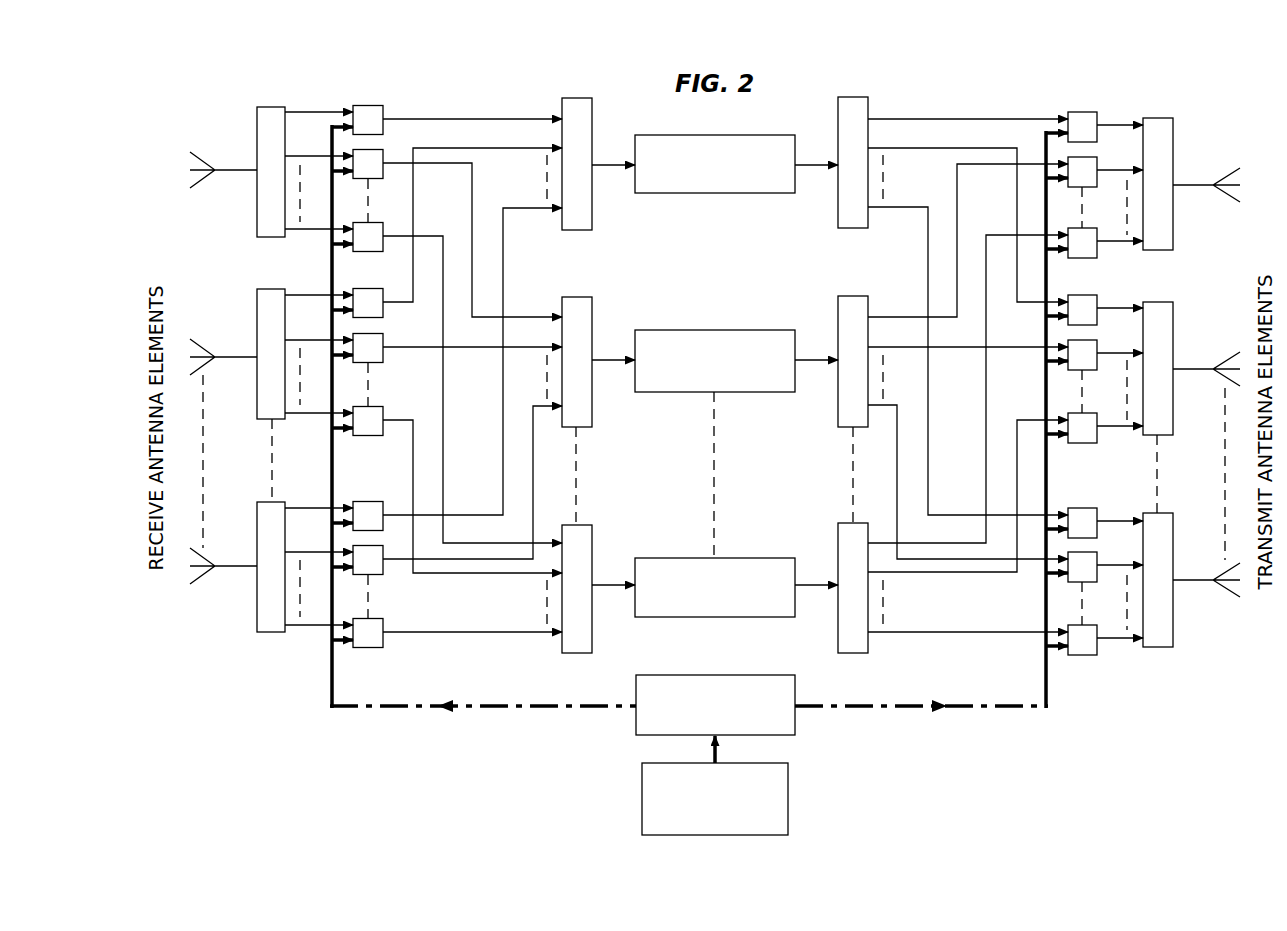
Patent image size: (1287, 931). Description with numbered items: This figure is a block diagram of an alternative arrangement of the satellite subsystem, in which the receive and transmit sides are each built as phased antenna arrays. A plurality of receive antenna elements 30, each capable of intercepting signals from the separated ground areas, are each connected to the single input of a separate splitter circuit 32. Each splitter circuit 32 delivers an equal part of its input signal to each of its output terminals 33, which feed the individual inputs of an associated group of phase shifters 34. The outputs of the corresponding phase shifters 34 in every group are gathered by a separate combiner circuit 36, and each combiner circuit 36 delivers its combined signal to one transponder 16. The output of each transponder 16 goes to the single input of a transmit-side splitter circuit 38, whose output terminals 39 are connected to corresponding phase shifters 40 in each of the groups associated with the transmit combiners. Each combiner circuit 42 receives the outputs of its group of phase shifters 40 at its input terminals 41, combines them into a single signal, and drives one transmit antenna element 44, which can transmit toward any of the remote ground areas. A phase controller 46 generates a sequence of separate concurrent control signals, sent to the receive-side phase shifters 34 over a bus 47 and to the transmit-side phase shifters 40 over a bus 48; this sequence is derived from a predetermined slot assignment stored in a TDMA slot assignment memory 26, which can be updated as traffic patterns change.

The transponder 16 is at (668, 135).
The TDMA slot assignment memory 26 is at (642, 784).
The receive antenna element 30 is at (217, 168).
The splitter circuit 32 is at (257, 118).
The output terminal 33 is at (287, 111).
The phase shifter 34 is at (368, 106).
The combiner circuit 36 is at (574, 98).
The splitter circuit 38 is at (851, 97).
The output terminal 39 is at (870, 118).
The phase shifter 40 is at (1082, 112).
The input terminal 41 is at (1142, 123).
The combiner circuit 42 is at (1162, 118).
The transmit antenna element 44 is at (1232, 167).
The phase controller 46 is at (680, 675).
The bus 47 is at (488, 706).
The bus 48 is at (845, 706).